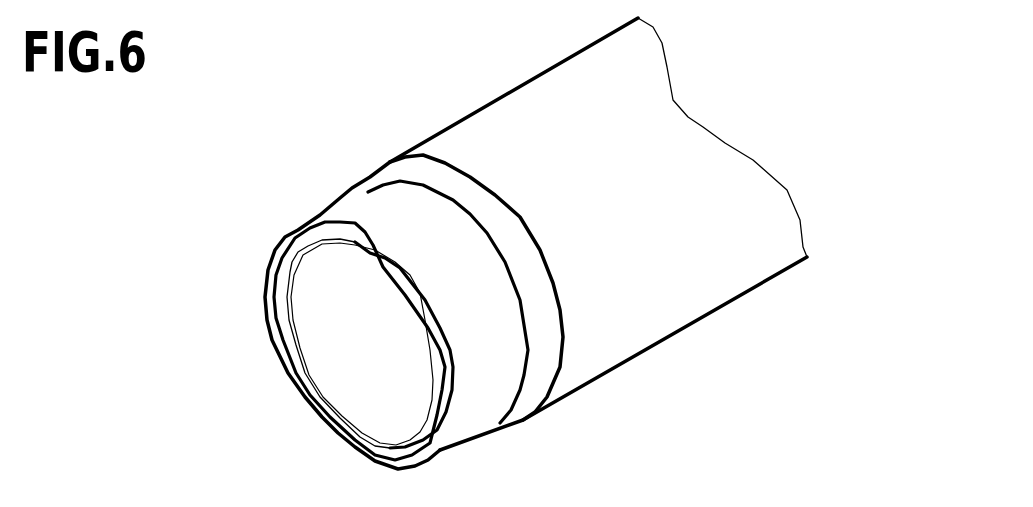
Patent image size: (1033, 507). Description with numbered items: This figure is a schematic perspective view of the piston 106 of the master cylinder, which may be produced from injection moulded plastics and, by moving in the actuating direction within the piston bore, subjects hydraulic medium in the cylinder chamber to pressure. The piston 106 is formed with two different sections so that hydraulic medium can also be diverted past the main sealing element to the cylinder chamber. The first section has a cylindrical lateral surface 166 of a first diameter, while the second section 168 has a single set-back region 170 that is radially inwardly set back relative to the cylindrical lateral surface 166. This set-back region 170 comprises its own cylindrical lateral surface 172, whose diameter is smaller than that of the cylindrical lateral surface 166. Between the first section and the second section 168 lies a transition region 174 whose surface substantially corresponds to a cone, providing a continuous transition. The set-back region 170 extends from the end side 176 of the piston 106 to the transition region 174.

The piston 106 is at (598, 228).
The cylindrical lateral surface 166 is at (441, 232).
The transition region 174 is at (429, 252).
The set-back region 170 is at (347, 294).
The second section 168 is at (334, 304).
The cylindrical lateral surface 172 is at (321, 314).
The end side 176 is at (297, 336).